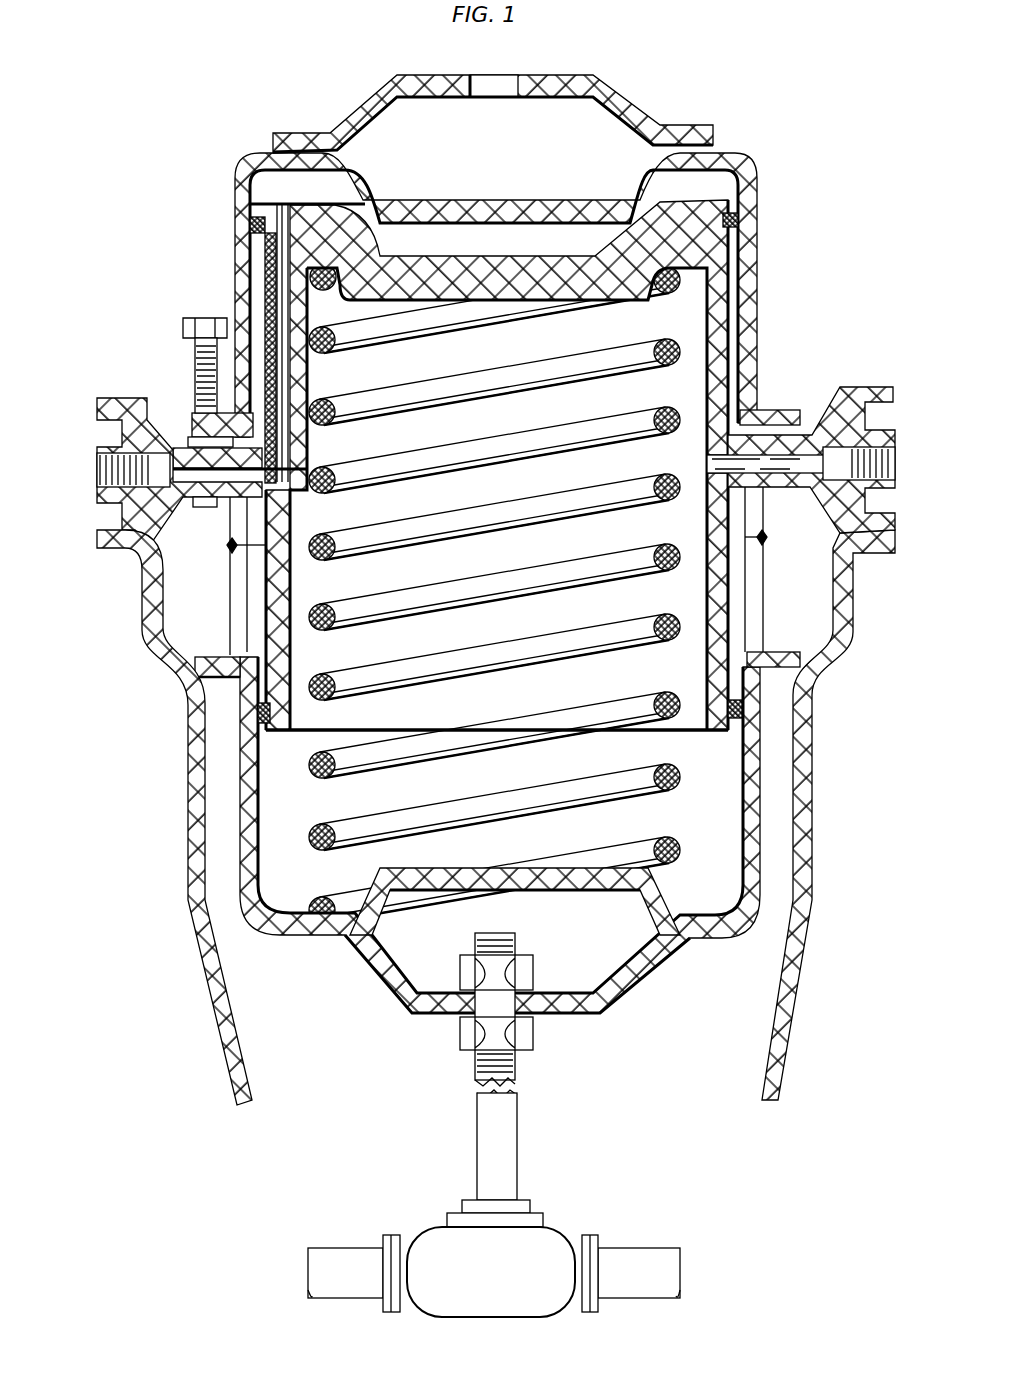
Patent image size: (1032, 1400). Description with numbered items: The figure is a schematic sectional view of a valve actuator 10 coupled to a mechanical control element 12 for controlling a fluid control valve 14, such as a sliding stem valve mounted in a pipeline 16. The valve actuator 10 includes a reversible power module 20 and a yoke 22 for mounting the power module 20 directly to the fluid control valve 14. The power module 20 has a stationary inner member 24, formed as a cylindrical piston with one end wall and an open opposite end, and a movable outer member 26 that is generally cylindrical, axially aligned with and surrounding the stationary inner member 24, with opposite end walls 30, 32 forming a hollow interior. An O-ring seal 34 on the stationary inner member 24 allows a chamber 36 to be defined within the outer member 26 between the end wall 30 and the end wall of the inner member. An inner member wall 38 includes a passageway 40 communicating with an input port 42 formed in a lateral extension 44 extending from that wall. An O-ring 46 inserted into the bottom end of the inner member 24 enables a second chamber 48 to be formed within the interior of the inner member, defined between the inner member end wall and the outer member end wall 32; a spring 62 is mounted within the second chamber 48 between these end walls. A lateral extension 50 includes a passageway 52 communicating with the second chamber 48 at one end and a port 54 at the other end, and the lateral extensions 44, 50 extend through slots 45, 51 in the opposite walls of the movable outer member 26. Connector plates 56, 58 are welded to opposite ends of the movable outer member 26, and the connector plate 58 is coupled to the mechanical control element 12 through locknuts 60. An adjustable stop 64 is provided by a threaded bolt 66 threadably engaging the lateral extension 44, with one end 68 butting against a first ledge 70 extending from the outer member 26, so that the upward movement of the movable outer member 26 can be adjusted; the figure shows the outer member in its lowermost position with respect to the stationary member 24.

The valve actuator 10 is at (718, 100).
The mechanical control element 12 is at (512, 1152).
The fluid control valve 14 is at (545, 1250).
The pipeline 16 is at (328, 1265).
The reversible power module 20 is at (340, 1022).
The yoke 22 is at (190, 735).
The stationary inner member 24 is at (300, 498).
The movable outer member 26 is at (242, 176).
The end wall 30 is at (512, 200).
The end wall 32 is at (440, 893).
The O-ring seal 34 is at (250, 225).
The chamber 36 is at (428, 254).
The inner member wall 38 is at (270, 300).
The passageway 40 is at (272, 255).
The input port 42 is at (100, 470).
The lateral extension 44 is at (192, 500).
The slot 45 is at (232, 590).
The O-ring 46 is at (262, 712).
The second chamber 48 is at (518, 564).
The lateral extension 50 is at (795, 482).
The slot 51 is at (760, 600).
The passageway 52 is at (782, 450).
The port 54 is at (880, 450).
The connector plate 56 is at (428, 78).
The connector plate 58 is at (460, 1012).
The locknuts 60 is at (528, 965).
The spring 62 is at (318, 772).
The adjustable stop 64 is at (185, 332).
The threaded bolt 66 is at (200, 368).
The bolt stop end 68 is at (218, 520).
The first ledge 70 is at (215, 658).